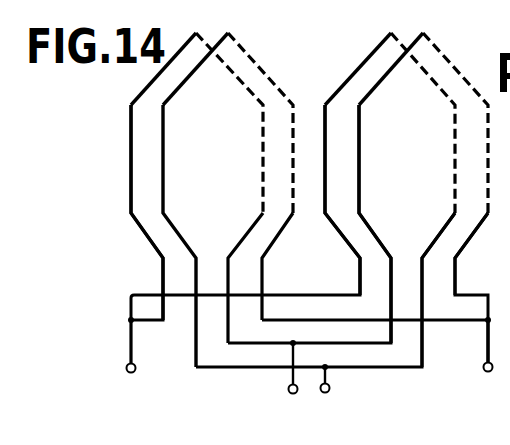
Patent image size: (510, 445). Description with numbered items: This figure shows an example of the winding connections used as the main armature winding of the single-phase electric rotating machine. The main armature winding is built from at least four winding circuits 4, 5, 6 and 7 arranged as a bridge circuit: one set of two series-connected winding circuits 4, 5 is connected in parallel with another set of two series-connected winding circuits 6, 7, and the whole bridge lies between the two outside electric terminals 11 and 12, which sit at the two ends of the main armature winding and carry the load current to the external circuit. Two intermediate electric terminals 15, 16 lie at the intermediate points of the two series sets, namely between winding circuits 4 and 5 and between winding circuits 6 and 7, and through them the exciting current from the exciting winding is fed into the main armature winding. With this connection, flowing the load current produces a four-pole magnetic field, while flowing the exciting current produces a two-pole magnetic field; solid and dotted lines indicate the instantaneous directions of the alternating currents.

The winding circuit 4 is at (190, 43).
The winding circuit 7 is at (238, 44).
The winding circuit 6 is at (368, 56).
The winding circuit 5 is at (363, 117).
The outside electric terminal 11 is at (135, 371).
The outside electric terminal 12 is at (484, 371).
The intermediate electric terminal 15 is at (290, 393).
The intermediate electric terminal 16 is at (329, 391).